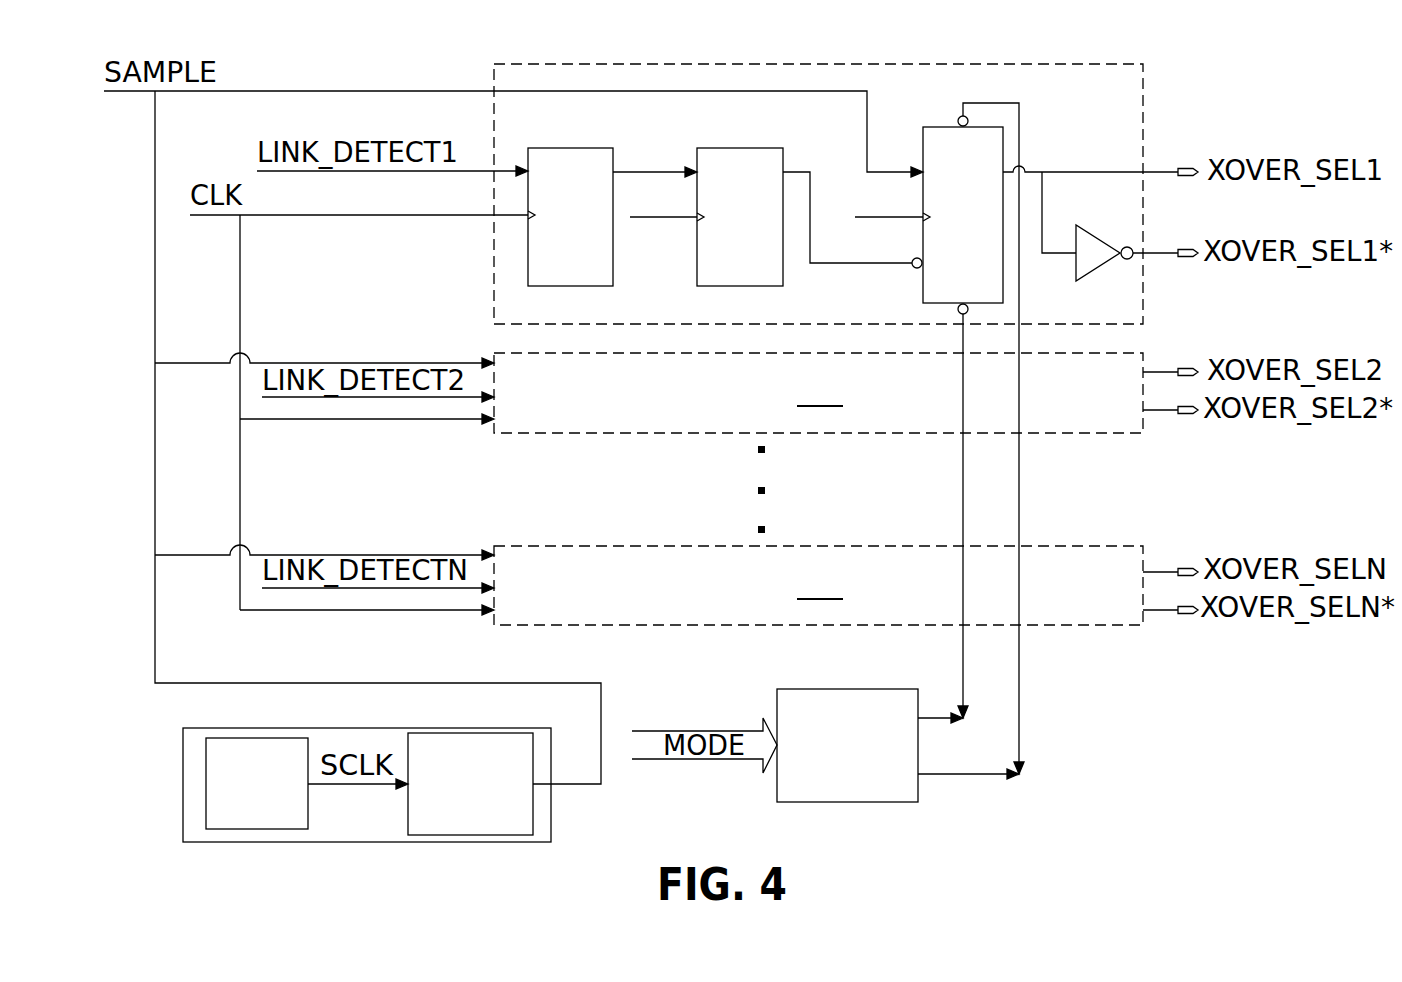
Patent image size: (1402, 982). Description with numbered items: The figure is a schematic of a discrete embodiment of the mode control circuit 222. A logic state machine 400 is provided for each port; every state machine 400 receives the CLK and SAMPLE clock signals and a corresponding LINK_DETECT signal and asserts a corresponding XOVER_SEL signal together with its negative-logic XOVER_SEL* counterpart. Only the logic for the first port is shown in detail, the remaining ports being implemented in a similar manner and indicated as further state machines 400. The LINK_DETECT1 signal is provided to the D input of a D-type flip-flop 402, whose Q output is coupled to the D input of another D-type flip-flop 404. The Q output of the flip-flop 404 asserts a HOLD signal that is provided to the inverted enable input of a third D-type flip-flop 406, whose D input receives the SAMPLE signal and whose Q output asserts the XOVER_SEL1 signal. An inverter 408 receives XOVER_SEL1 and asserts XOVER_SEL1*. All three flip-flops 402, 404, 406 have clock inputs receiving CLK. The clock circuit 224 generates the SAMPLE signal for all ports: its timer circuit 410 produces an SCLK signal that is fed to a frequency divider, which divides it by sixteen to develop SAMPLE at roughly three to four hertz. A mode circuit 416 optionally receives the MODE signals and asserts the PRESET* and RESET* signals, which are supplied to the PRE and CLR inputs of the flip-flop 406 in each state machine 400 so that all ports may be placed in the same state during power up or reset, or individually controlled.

The mode control circuit 222 is at (1189, 96).
The logic state machine 400 is at (562, 63).
The D-type flip-flop 402 is at (593, 228).
The D-type flip-flop 404 is at (763, 228).
The D-type flip-flop with inverted enable input 406 is at (987, 228).
The inverter 408 is at (1105, 265).
The clock circuit 224 is at (285, 728).
The timer circuit 410 is at (278, 814).
The mode circuit 416 is at (495, 829).